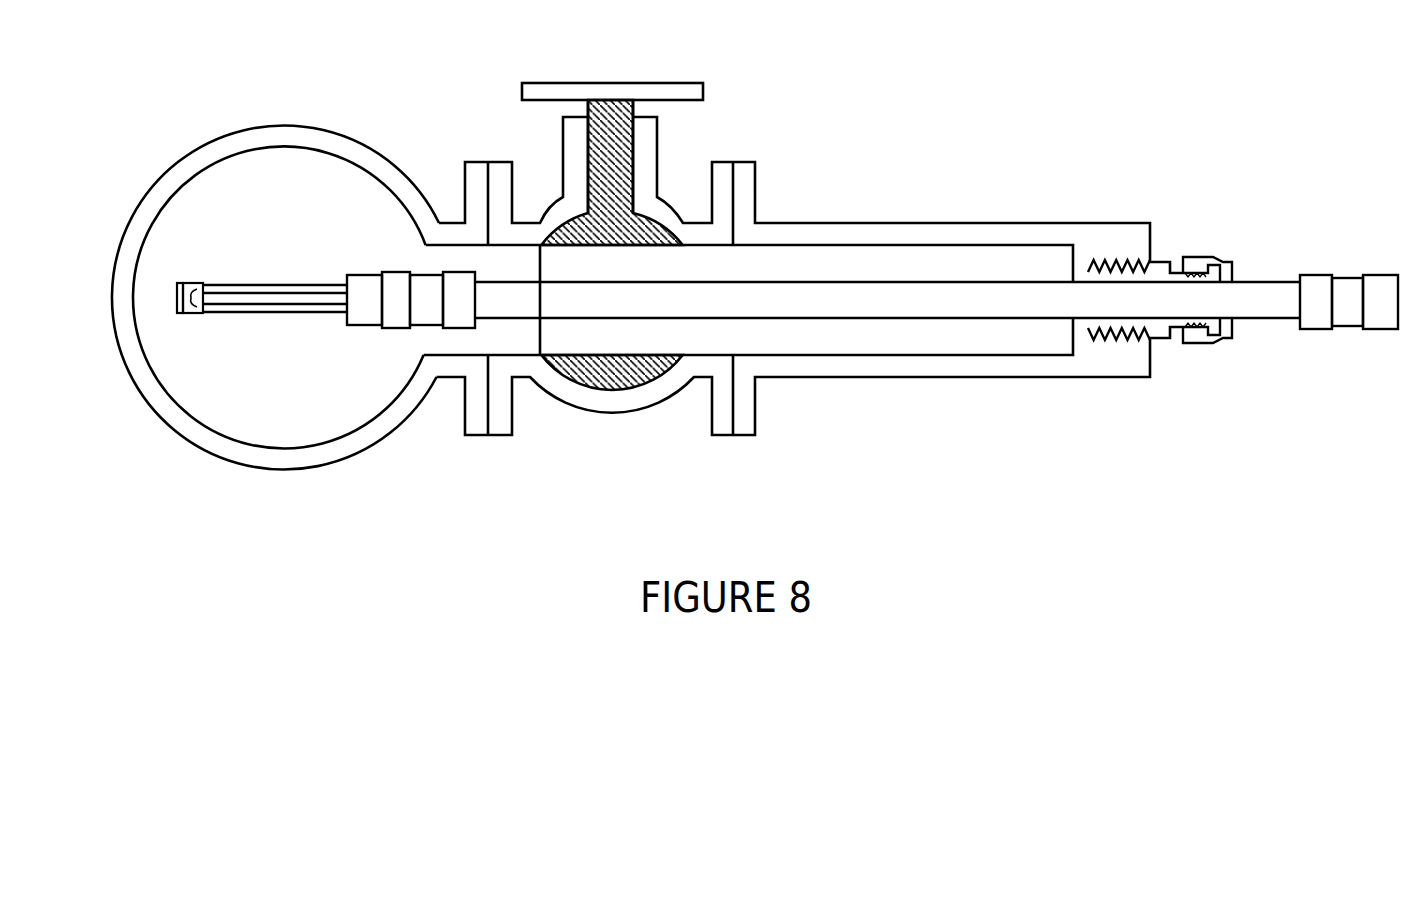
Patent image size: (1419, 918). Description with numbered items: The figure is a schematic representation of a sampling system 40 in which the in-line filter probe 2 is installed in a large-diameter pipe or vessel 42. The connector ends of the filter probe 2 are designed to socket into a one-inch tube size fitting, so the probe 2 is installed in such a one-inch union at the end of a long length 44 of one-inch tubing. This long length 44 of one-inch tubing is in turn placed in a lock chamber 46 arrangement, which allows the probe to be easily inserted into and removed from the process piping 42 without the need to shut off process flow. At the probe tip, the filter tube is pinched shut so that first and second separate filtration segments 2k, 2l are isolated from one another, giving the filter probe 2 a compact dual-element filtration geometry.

The sampling system 40 is at (755, 245).
The pipe or vessel 42 is at (313, 125).
The lock chamber 46 is at (953, 223).
The long length of one-inch tubing 44 is at (1275, 320).
The filter probe 2 is at (787, 285).
The second filtration segment 2l is at (258, 287).
The first filtration segment 2k is at (287, 307).